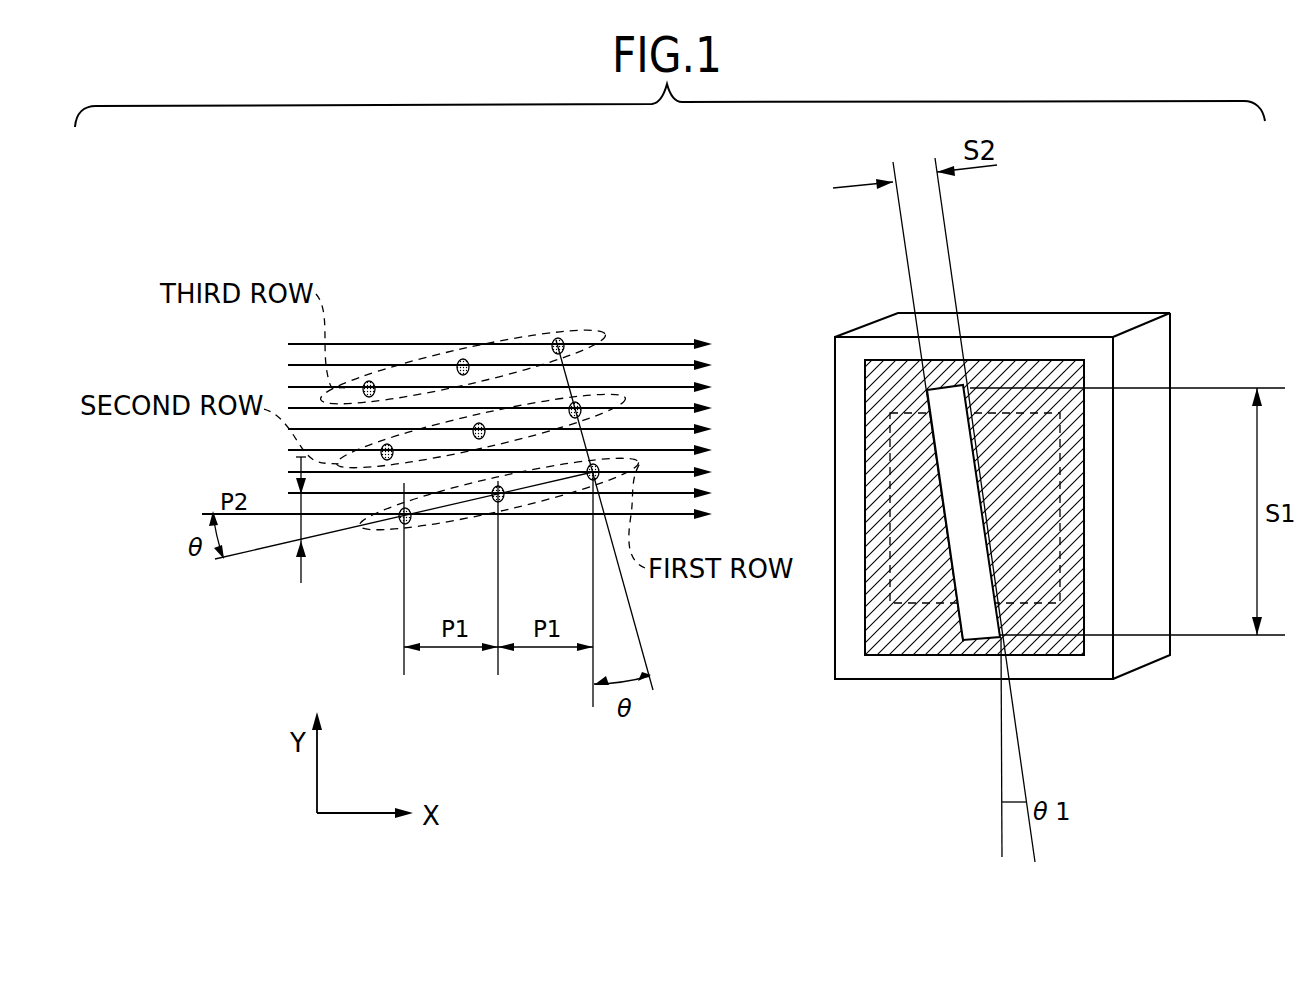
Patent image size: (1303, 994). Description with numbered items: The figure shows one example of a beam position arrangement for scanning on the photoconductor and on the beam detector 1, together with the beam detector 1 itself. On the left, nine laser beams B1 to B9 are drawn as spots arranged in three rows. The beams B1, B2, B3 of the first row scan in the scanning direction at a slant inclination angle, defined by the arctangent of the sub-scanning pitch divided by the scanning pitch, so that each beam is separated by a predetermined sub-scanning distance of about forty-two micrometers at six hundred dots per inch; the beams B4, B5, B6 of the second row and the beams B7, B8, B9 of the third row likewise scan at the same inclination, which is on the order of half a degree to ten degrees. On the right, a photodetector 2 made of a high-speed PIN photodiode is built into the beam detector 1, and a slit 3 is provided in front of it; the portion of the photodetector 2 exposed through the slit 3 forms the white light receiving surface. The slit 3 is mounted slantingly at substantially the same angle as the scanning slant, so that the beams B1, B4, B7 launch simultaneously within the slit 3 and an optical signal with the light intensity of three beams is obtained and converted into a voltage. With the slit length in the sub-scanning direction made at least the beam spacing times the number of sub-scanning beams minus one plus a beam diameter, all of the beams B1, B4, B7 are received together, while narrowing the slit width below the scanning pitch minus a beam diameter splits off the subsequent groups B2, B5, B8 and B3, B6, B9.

The beam detector 1 is at (1122, 322).
The photodetector 2 is at (880, 360).
The slit 3 is at (963, 643).
The laser beam B1 is at (588, 481).
The laser beam B2 is at (493, 501).
The laser beam B3 is at (399, 522).
The laser beam B4 is at (575, 401).
The laser beam B5 is at (479, 422).
The laser beam B6 is at (387, 443).
The laser beam B7 is at (558, 337).
The laser beam B8 is at (463, 358).
The laser beam B9 is at (371, 380).